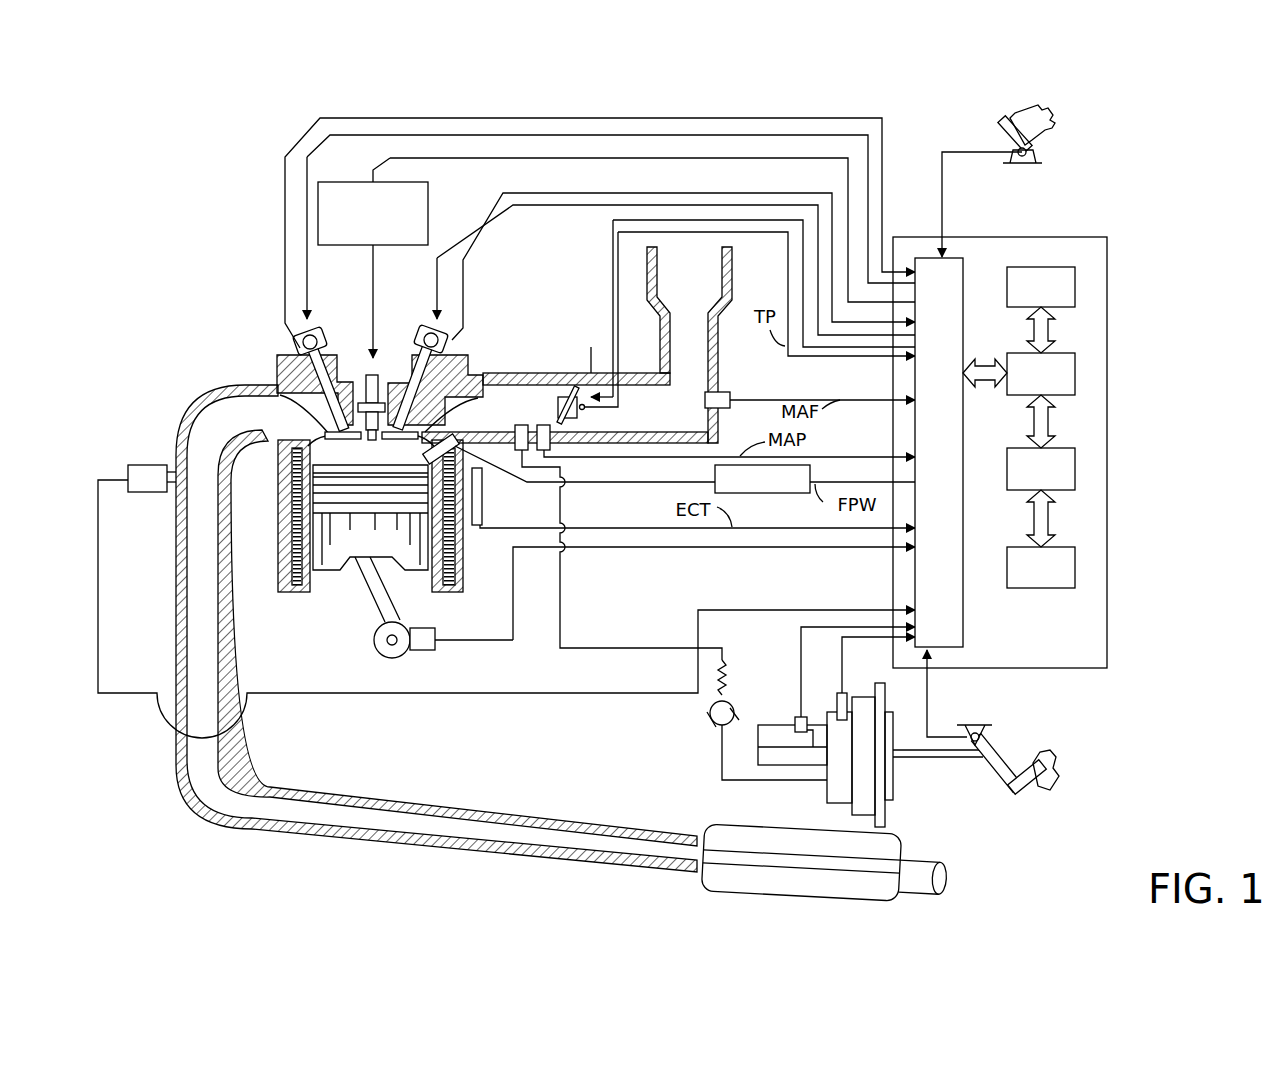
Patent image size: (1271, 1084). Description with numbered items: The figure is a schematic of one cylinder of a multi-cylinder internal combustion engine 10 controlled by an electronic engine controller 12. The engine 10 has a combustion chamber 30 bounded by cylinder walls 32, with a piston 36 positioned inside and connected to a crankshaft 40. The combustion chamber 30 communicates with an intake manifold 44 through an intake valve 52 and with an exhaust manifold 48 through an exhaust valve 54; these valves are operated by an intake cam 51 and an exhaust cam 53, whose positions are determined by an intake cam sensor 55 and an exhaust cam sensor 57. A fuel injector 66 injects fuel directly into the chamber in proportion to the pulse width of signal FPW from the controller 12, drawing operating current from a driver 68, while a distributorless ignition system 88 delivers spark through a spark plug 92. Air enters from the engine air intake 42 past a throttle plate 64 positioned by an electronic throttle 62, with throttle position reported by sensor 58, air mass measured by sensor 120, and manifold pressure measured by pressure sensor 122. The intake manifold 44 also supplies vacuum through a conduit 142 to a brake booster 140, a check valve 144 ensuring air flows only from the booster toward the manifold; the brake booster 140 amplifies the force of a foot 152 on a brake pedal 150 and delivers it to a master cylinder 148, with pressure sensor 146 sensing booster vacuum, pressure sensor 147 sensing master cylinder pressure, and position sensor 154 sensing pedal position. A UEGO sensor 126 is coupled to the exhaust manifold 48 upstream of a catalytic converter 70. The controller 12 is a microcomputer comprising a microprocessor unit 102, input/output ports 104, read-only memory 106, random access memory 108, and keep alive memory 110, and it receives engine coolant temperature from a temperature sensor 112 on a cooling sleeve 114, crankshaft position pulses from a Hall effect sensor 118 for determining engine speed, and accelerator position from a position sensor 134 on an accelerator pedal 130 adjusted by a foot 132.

The internal combustion engine 10 is at (216, 311).
The electronic engine controller 12 is at (1107, 237).
The combustion chamber 30 is at (370, 447).
The cylinder walls 32 is at (300, 605).
The piston 36 is at (355, 545).
The crankshaft 40 is at (385, 657).
The engine air intake 42 is at (676, 292).
The intake manifold 44 is at (484, 416).
The exhaust manifold 48 is at (236, 422).
The intake cam 51 is at (428, 322).
The intake valve 52 is at (422, 432).
The exhaust cam 53 is at (315, 322).
The exhaust valve 54 is at (278, 395).
The intake cam sensor 55 is at (440, 348).
The exhaust cam sensor 57 is at (300, 345).
The throttle position sensor 58 is at (593, 350).
The electronic throttle 62 is at (556, 378).
The throttle plate 64 is at (580, 386).
The fuel injector 66 is at (481, 466).
The driver 68 is at (805, 495).
The catalytic converter 70 is at (703, 888).
The distributorless ignition system 88 is at (333, 182).
The spark plug 92 is at (376, 372).
The microprocessor unit 102 is at (1075, 373).
The input/output ports 104 is at (963, 268).
The read-only memory 106 is at (1075, 288).
The random access memory 108 is at (1075, 468).
The keep alive memory 110 is at (1075, 568).
The temperature sensor 112 is at (474, 470).
The cooling sleeve 114 is at (463, 562).
The Hall effect sensor 118 is at (418, 650).
The air mass sensor 120 is at (726, 394).
The pressure sensor 122 is at (545, 425).
The Universal Exhaust Gas Oxygen sensor 126 is at (128, 470).
The accelerator pedal 130 is at (1005, 132).
The foot 132 is at (1055, 122).
The position sensor 134 is at (1033, 152).
The brake booster 140 is at (828, 802).
The conduit 142 is at (558, 635).
The check valve 144 is at (712, 722).
The pressure sensor 146 is at (846, 695).
The pressure sensor 147 is at (803, 717).
The master cylinder 148 is at (760, 725).
The brake pedal 150 is at (1000, 783).
The foot 152 is at (1035, 760).
The position sensor 154 is at (965, 735).